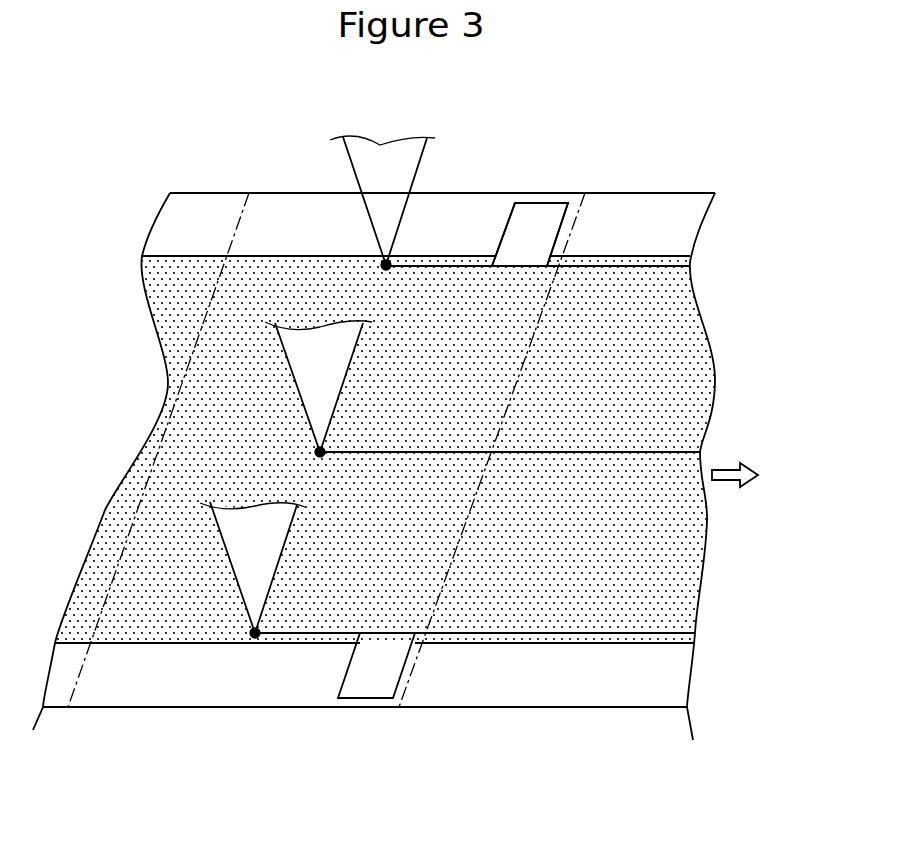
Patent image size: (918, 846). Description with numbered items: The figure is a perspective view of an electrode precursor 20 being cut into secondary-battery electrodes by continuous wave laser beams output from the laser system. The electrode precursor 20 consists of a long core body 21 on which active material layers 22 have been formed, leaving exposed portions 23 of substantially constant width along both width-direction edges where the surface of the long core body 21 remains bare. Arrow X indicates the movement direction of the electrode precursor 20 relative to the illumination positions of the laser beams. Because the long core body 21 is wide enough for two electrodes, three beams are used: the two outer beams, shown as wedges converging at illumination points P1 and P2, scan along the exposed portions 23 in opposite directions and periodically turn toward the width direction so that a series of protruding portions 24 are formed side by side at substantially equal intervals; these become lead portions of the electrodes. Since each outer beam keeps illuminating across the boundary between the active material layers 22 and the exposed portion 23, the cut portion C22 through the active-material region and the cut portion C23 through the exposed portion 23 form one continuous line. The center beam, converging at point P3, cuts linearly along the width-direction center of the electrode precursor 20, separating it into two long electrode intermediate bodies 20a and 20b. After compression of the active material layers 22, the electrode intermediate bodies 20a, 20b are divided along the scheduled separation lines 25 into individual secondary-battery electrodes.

The electrode precursor 20 is at (690, 163).
The long core body 21 is at (202, 193).
The active material layers 22 is at (200, 402).
The exposed portions 23 is at (638, 217).
The protruding portion 24 is at (533, 217).
The scheduled separation lines 25 is at (84, 668).
The electrode intermediate body 20a is at (690, 380).
The electrode intermediate body 20b is at (685, 553).
The cut portion of the portion where the active material layers are provided C22 is at (643, 266).
The cut portion of the exposed portion C23 is at (553, 203).
The first point P1 is at (388, 262).
The second point P2 is at (256, 640).
The third point P3 is at (321, 460).
The arrow X is at (747, 475).